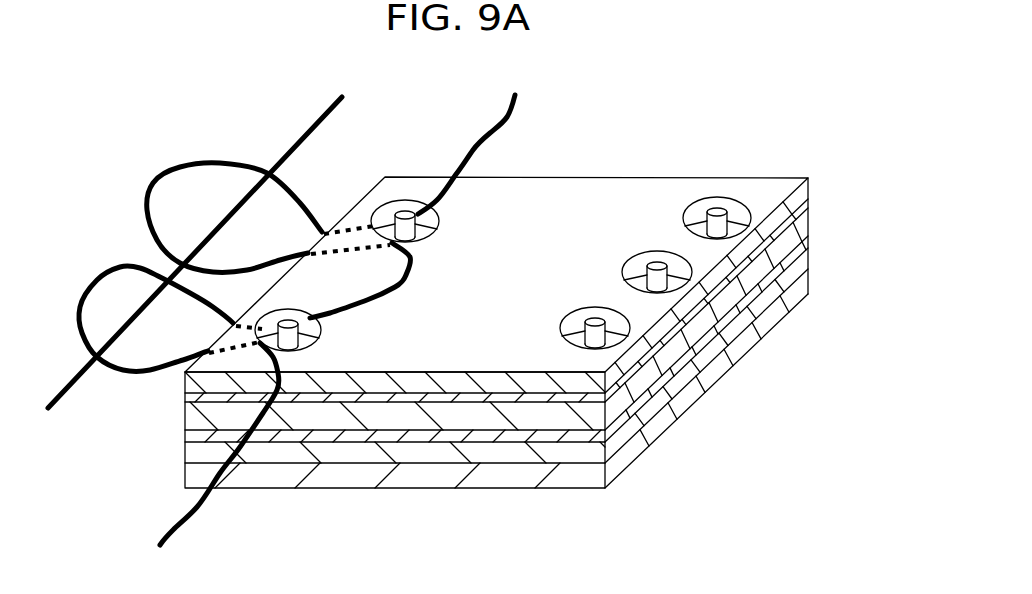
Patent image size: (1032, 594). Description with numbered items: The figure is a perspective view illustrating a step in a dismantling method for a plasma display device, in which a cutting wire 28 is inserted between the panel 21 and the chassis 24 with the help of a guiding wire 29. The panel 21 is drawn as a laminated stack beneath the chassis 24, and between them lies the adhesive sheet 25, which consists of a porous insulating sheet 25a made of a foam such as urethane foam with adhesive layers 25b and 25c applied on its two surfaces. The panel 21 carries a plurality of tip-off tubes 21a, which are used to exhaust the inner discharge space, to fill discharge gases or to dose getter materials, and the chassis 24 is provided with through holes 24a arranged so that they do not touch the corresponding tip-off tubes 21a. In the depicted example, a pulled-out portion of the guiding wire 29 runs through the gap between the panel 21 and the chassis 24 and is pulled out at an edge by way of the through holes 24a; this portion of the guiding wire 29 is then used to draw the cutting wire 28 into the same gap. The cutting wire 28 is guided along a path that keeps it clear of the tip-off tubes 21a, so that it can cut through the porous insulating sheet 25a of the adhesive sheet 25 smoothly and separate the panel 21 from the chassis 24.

The panel 21 is at (567, 473).
The tip-off tubes 21a is at (403, 210).
The chassis 24 is at (636, 188).
The through holes 24a is at (748, 207).
The adhesive sheet 25 is at (551, 358).
The porous insulating sheet 25a is at (752, 318).
The adhesive layer 25b is at (676, 419).
The adhesive layer 25c is at (760, 297).
The cutting wire 28 is at (343, 117).
The guiding wire 29 is at (507, 122).